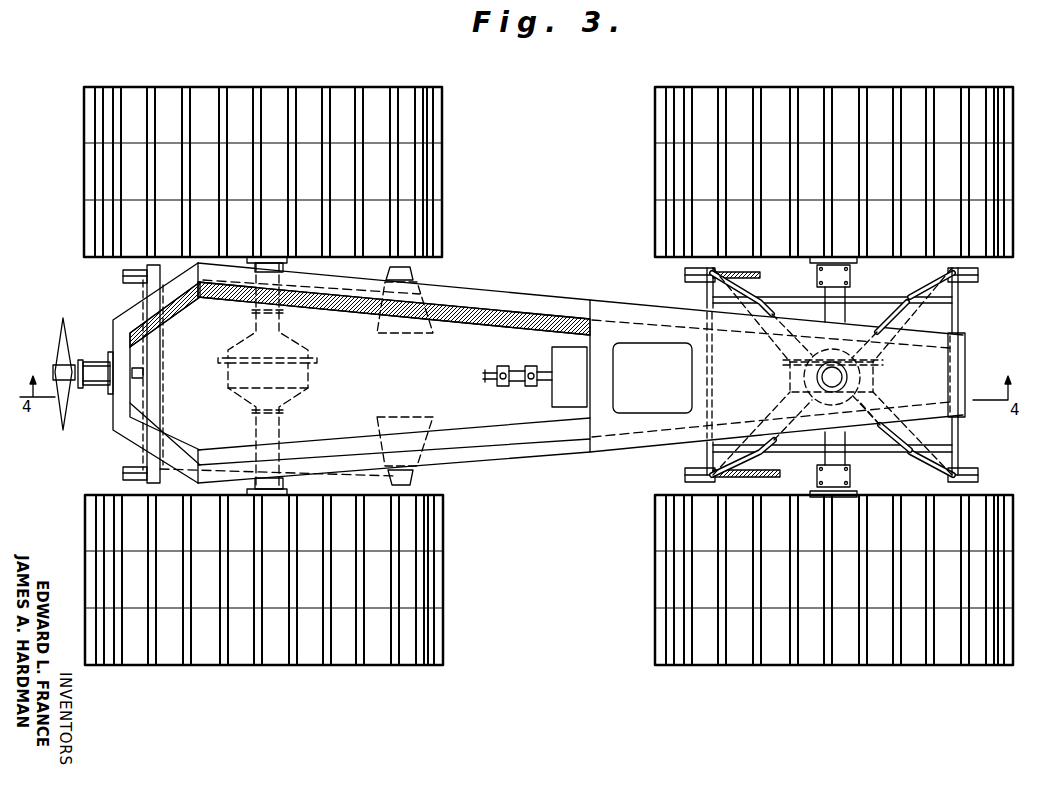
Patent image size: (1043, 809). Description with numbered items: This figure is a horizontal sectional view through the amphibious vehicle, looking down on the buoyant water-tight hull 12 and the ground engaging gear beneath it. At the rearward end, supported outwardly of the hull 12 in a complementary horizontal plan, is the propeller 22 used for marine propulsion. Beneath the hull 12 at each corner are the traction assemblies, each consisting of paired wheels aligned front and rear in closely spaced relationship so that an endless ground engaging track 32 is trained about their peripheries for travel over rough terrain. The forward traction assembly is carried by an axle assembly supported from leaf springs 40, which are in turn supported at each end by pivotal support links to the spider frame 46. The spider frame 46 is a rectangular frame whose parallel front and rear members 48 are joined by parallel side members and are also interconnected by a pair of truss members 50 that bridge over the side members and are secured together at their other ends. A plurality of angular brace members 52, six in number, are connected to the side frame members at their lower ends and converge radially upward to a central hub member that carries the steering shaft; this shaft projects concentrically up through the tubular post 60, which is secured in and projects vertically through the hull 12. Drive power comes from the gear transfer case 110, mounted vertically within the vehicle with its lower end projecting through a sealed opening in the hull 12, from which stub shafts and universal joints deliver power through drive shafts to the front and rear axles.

The hull 12 is at (560, 447).
The propeller 22 is at (63, 341).
The endless ground engaging track 32 is at (437, 635).
The leaf springs 40 is at (922, 478).
The spider frame 46 is at (964, 441).
The front and rear members 48 is at (893, 430).
The truss members 50 is at (957, 425).
The angular brace members 52 is at (898, 433).
The tubular post 60 is at (848, 378).
The gear transfer case 110 is at (560, 360).